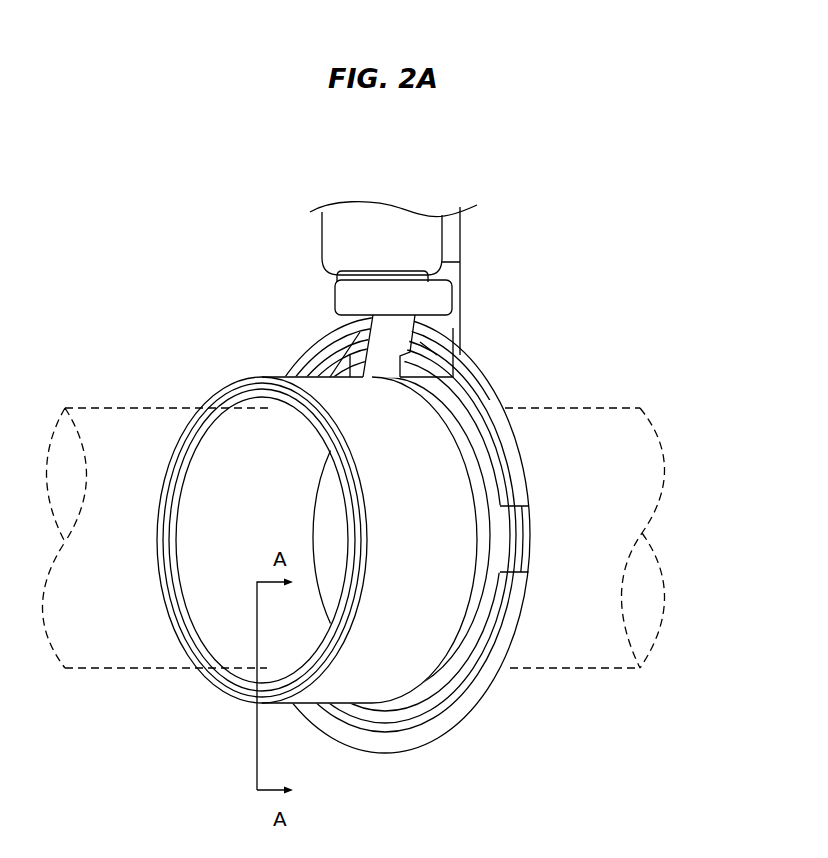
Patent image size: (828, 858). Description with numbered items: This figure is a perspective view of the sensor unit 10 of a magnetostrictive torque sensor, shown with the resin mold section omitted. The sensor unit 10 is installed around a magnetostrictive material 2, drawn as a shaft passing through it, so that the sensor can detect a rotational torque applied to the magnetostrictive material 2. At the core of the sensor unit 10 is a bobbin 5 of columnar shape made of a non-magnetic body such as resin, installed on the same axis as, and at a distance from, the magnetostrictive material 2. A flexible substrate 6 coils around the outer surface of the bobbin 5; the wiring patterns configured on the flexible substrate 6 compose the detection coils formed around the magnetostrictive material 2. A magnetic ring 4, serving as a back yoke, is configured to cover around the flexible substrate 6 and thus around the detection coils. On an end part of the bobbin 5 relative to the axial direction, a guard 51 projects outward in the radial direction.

The magnetostrictive material 2 is at (627, 420).
The magnetic ring 4 is at (218, 390).
The bobbin 5 is at (240, 402).
The flexible substrate 6 is at (267, 388).
The sensor unit 10 is at (240, 288).
The guard 51 is at (482, 386).